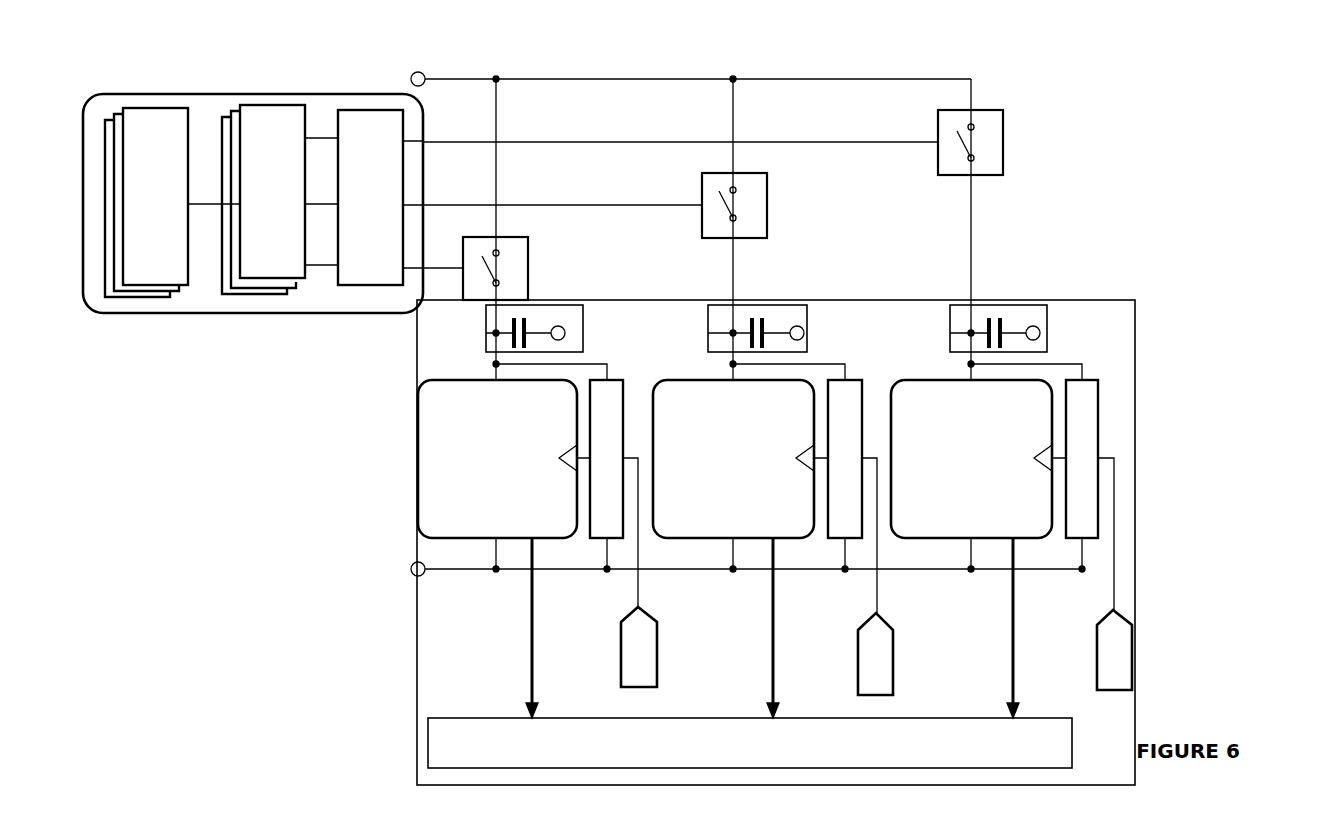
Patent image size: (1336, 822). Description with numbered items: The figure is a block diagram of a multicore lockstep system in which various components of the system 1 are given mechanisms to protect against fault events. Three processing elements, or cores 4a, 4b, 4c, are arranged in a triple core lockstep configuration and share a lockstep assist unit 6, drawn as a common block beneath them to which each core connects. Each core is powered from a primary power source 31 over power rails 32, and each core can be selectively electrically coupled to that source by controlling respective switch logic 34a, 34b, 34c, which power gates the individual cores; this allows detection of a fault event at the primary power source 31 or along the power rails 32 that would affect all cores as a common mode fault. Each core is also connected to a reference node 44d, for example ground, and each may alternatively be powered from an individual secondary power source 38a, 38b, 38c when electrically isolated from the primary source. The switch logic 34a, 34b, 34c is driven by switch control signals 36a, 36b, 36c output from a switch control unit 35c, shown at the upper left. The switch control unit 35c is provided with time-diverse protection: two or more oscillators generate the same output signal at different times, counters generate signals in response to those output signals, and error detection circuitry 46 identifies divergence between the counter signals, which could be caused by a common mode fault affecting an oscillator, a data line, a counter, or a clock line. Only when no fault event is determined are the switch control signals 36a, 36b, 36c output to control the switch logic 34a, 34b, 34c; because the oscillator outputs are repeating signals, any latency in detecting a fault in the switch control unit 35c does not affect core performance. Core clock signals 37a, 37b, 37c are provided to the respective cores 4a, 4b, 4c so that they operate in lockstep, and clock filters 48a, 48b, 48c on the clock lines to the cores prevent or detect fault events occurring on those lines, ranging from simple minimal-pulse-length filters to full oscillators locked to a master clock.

The system 1 is at (1230, 154).
The processing element 4a is at (458, 405).
The processing element 4b is at (696, 405).
The processing element 4c is at (933, 405).
The lockstep assist unit 6 is at (451, 748).
The primary power source 31 is at (410, 78).
The power rails 32 is at (622, 73).
The switch logic 34a is at (527, 250).
The switch logic 34b is at (764, 196).
The switch logic 34c is at (1003, 119).
The switch control unit 35c is at (180, 320).
The switch control signal 36a is at (425, 267).
The switch control signal 36b is at (447, 204).
The switch control signal 36c is at (458, 140).
The core clock signal 37a is at (657, 665).
The core clock signal 37b is at (893, 660).
The core clock signal 37c is at (1127, 660).
The secondary power source 38a is at (590, 333).
The secondary power source 38b is at (808, 318).
The secondary power source 38c is at (1047, 310).
The reference node 44d is at (720, 561).
The error detection circuitry 46 is at (364, 197).
The clock filter 48a is at (624, 381).
The clock filter 48b is at (836, 367).
The clock filter 48c is at (1100, 380).